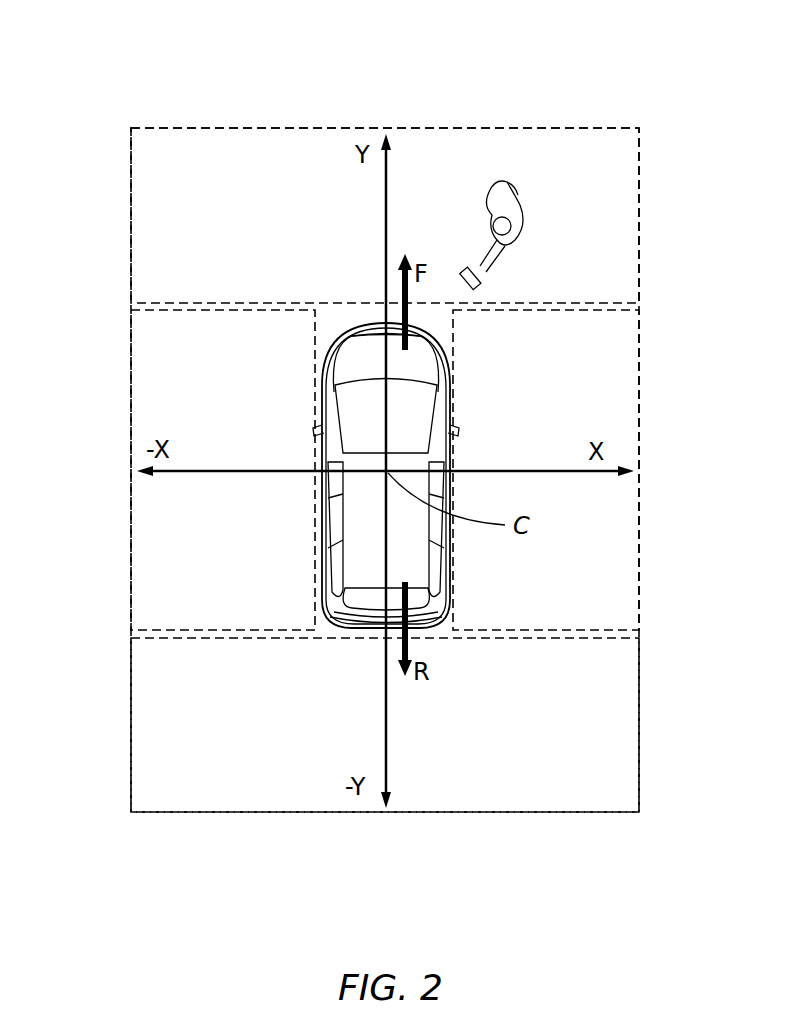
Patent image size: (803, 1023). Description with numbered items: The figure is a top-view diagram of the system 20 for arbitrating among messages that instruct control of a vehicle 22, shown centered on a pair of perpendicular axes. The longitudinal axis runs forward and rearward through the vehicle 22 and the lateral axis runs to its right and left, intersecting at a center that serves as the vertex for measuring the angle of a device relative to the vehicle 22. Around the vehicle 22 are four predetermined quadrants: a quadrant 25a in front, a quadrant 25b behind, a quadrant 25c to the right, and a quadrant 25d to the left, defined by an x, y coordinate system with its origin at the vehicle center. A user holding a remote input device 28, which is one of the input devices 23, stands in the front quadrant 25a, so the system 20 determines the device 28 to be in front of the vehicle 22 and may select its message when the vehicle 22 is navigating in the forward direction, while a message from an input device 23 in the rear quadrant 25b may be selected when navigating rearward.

The system 20 is at (205, 80).
The vehicle 22 is at (335, 380).
The input device 23 is at (468, 270).
The quadrant 25a is at (605, 124).
The quadrant 25b is at (603, 815).
The quadrant 25c is at (642, 347).
The quadrant 25d is at (128, 578).
The remote input device 28 is at (480, 290).